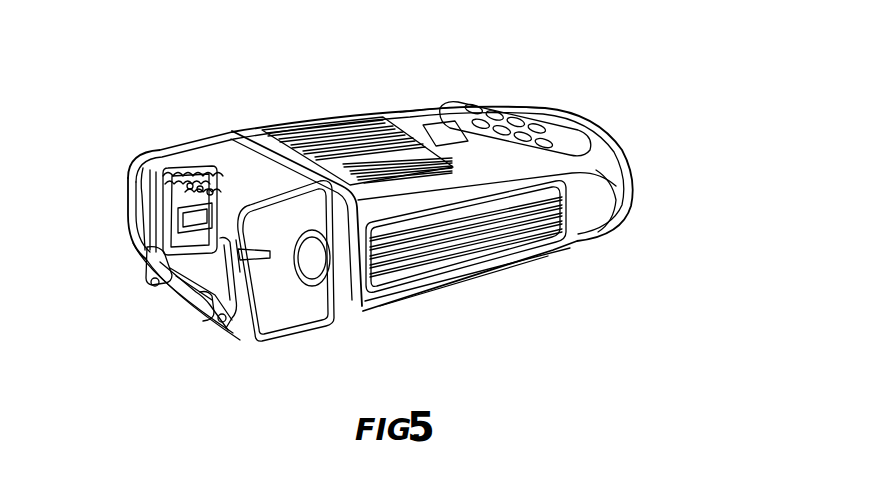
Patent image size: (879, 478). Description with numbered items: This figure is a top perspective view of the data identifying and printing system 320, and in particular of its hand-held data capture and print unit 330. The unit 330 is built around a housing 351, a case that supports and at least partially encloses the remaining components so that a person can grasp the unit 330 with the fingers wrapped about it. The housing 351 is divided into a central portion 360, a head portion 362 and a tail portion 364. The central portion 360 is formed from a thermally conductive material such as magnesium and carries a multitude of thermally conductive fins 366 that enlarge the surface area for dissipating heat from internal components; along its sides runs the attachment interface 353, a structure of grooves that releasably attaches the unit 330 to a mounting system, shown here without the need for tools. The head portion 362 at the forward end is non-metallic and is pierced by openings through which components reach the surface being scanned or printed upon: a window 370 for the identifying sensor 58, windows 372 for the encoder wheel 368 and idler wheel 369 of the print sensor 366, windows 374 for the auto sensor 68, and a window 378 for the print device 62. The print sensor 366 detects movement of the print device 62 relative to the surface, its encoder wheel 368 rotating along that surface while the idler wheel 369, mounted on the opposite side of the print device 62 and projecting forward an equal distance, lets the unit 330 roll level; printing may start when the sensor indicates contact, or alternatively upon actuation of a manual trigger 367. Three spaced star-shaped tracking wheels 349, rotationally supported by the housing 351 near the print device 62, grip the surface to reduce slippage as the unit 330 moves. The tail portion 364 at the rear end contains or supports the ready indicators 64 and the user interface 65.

The data identifying and printing system 320 is at (678, 87).
The data capture and print unit 330 is at (430, 101).
The tracking wheels 349 is at (193, 183).
The housing 351 is at (442, 105).
The attachment interface 353 is at (438, 294).
The central portion 360 is at (323, 123).
The head portion 362 is at (167, 150).
The tail portion 364 is at (632, 184).
The print sensor 366 is at (390, 150).
The manual trigger 367 is at (361, 308).
The encoder wheel 368 is at (248, 260).
The idler wheel 369 is at (143, 200).
The window 370 is at (173, 297).
The windows 372 is at (147, 180).
The windows 374 is at (150, 281).
The window 378 is at (168, 175).
The identifying sensor 58 is at (187, 297).
The print device 62 is at (210, 200).
The ready indicators 64 is at (540, 105).
The user interface 65 is at (557, 143).
The auto sensor 68 is at (143, 257).